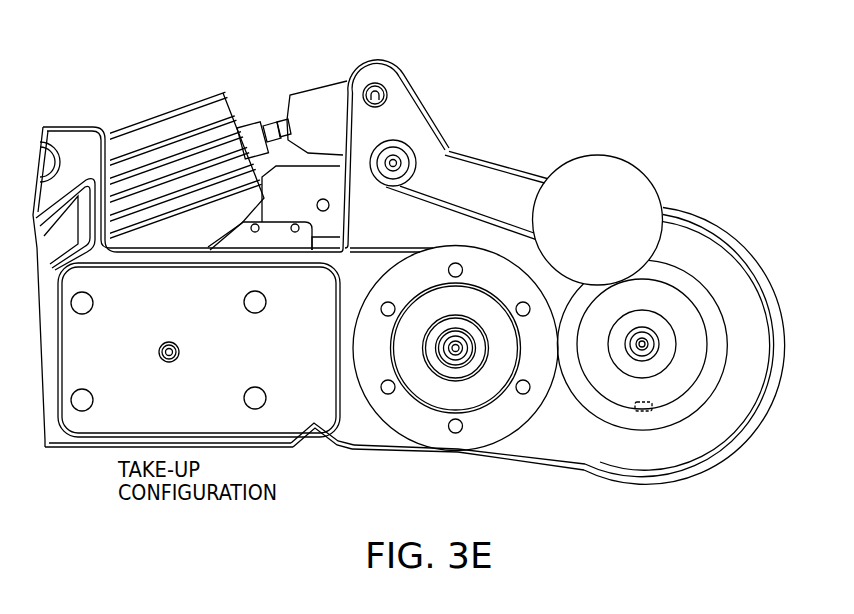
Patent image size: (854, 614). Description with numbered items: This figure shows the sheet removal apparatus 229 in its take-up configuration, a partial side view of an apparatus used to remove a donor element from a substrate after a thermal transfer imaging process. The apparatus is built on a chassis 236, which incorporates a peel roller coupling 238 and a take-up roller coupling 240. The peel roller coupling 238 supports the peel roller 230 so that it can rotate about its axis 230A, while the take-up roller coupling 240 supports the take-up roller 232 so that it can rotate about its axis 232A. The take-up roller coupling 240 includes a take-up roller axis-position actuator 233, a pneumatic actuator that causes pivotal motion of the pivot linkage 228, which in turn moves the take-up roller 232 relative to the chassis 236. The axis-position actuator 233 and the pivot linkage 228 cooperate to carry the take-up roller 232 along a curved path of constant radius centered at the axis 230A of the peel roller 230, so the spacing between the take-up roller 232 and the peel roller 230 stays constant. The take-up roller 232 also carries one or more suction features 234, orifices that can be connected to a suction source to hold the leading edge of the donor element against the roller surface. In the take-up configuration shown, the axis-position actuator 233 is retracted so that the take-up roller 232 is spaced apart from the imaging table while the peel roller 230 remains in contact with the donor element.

The pivot linkage 228 is at (376, 86).
The sheet removal apparatus 229 is at (708, 172).
The peel roller 230 is at (455, 351).
The peel roller axis 230A is at (456, 346).
The take-up roller 232 is at (696, 373).
The take-up roller axis 232A is at (658, 345).
The take-up roller axis-position actuator 233 is at (246, 132).
The suction features 234 is at (652, 408).
The chassis 236 is at (347, 425).
The peel roller coupling 238 is at (328, 422).
The take-up roller coupling 240 is at (722, 290).